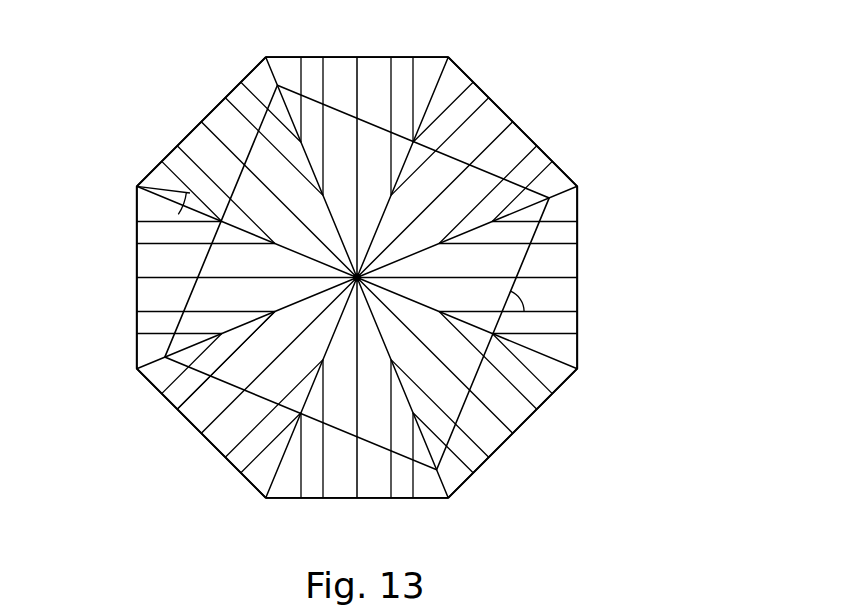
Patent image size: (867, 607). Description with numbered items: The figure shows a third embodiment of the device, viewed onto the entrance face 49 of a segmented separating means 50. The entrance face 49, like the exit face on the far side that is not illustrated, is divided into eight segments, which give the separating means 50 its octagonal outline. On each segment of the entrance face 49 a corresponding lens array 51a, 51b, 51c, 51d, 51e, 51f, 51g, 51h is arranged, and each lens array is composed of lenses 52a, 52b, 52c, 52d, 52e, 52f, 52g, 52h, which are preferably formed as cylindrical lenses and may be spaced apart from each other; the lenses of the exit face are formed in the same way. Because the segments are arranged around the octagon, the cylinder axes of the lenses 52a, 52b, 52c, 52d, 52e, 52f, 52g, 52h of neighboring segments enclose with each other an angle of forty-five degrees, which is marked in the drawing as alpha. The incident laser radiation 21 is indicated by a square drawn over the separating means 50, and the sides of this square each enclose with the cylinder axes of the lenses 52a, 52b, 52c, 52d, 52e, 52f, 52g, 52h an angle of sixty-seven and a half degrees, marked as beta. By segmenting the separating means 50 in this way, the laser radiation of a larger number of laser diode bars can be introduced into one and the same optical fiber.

The separating means 50 is at (590, 92).
The incident laser radiation 21 is at (456, 440).
The entrance face 49 is at (166, 412).
The lens array 51a is at (124, 293).
The lens array 51b is at (166, 140).
The lens array 51c is at (283, 50).
The lens array 51d is at (480, 70).
The lens array 51e is at (594, 328).
The lens array 51f is at (553, 428).
The lens array 51g is at (288, 515).
The lens array 51h is at (134, 378).
The lens 52a is at (143, 263).
The lens 52b is at (223, 117).
The lens 52c is at (403, 60).
The lens 52d is at (540, 158).
The lens 52e is at (567, 238).
The lens 52f is at (470, 475).
The lens 52g is at (413, 498).
The lens 52h is at (227, 442).